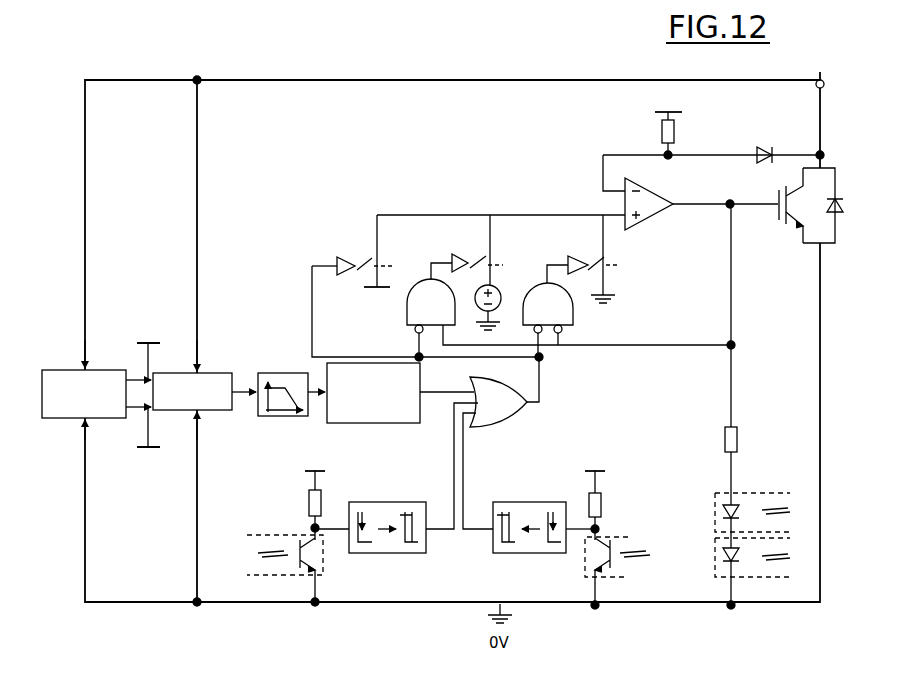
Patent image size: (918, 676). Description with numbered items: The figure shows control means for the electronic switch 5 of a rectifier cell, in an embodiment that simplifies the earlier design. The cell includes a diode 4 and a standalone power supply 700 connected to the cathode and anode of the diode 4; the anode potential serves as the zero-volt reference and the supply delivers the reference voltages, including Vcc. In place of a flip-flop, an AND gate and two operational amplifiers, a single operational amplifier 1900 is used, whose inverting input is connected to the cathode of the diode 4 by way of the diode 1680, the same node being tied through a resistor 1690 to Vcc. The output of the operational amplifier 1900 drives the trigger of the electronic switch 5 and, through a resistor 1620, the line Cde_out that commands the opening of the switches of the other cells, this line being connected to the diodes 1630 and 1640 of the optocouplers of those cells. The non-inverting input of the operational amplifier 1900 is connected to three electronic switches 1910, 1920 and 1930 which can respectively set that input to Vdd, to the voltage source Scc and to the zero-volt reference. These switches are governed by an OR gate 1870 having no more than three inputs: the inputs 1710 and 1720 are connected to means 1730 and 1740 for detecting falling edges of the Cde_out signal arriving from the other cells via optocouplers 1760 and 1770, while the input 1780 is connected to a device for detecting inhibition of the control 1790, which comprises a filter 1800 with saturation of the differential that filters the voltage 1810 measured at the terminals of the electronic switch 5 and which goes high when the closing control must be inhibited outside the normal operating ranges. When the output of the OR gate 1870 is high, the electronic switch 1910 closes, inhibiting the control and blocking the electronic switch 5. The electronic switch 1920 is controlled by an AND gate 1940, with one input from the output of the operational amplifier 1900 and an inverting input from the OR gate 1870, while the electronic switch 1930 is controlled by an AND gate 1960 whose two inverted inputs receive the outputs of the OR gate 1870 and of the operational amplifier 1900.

The standalone power supply 700 is at (58, 367).
The measured voltage 1810 is at (236, 373).
The filter 1800 is at (268, 416).
The device for detecting inhibition of the control 1790 is at (356, 423).
The input of the OR gate 1780 is at (437, 394).
The OR gate 1870 is at (522, 412).
The electronic switch 1910 is at (372, 262).
The electronic switch 1920 is at (486, 260).
The electronic switch 1930 is at (596, 263).
The AND gate 1940 is at (412, 310).
The AND gate 1960 is at (566, 312).
The operational amplifier 1900 is at (652, 216).
The resistor 1690 is at (662, 128).
The diode 1680 is at (757, 149).
The electronic switch 5 is at (783, 222).
The diode 4 is at (826, 245).
The resistor 1620 is at (725, 434).
The optocoupler diode 1630 is at (725, 500).
The optocoupler diode 1640 is at (722, 555).
The input of the OR gate 1710 is at (448, 498).
The input of the OR gate 1720 is at (467, 478).
The falling-edge detection means 1730 is at (398, 553).
The falling-edge detection means 1740 is at (539, 553).
The optocoupler 1760 is at (305, 575).
The optocoupler 1770 is at (622, 577).